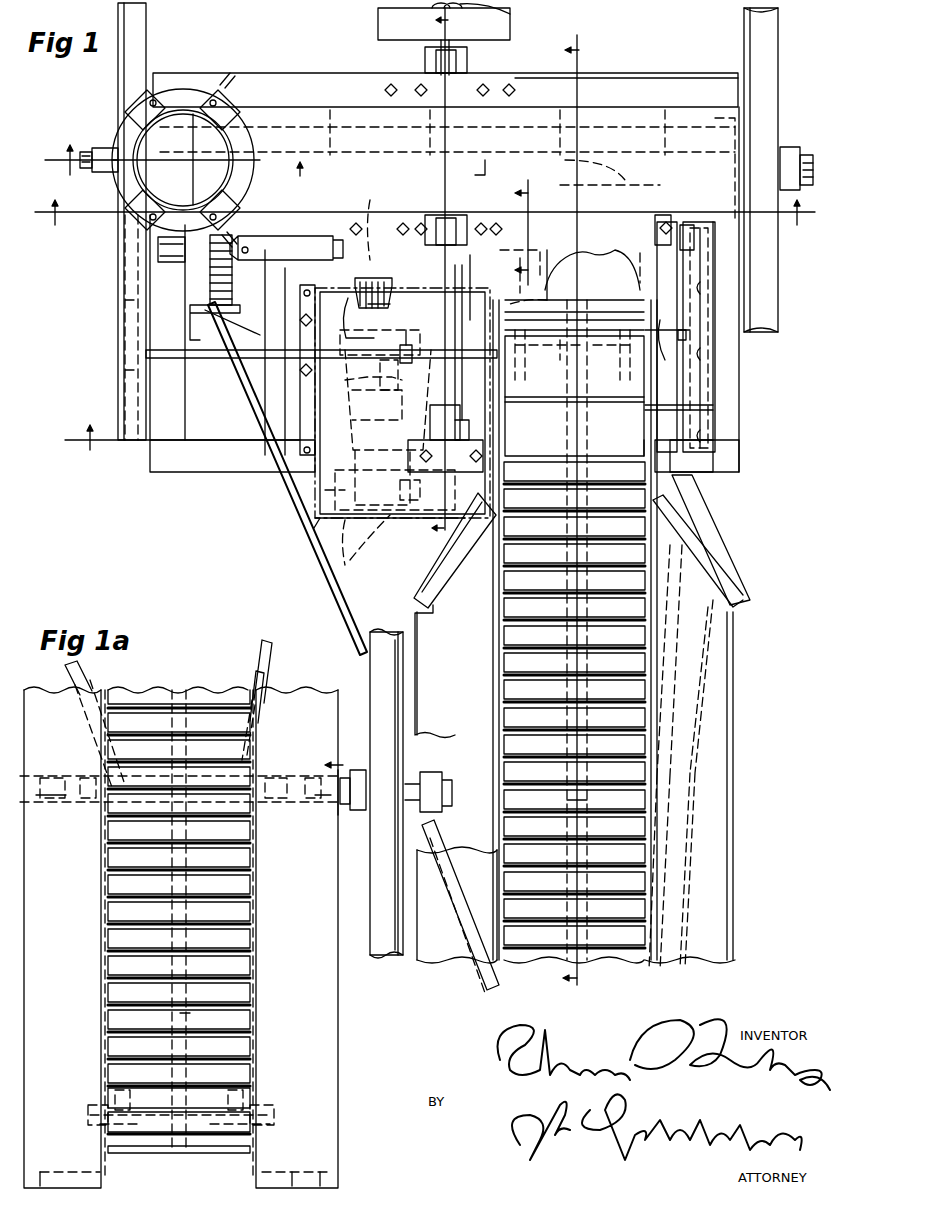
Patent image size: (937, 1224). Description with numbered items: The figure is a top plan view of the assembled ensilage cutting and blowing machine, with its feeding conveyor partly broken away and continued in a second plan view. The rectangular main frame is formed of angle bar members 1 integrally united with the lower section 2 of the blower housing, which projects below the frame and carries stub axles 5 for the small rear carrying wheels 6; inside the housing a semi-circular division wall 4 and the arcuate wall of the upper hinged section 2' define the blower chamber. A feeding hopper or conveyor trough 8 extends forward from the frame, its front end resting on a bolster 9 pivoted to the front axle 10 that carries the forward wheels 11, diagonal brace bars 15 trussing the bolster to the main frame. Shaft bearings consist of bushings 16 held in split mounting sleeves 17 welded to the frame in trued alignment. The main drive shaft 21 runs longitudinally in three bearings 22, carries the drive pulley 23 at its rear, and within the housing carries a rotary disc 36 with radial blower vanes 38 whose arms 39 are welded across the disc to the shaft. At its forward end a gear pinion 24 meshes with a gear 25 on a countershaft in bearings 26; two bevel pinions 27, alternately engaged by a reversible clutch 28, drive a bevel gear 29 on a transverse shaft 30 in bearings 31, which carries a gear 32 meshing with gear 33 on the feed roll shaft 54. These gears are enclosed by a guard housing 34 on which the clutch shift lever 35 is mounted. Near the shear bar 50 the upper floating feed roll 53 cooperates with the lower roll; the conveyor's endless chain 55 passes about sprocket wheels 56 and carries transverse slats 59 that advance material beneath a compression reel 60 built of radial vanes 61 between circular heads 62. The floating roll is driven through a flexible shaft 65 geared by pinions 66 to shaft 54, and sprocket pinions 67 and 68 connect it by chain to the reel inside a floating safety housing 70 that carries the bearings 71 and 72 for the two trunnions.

In FIG. 1, the angle bar members of the main frame 1 is at (690, 82).
In FIG. 1, the lower section of the blower housing 2 is at (572, 516).
In FIG. 1, the upper hinged section of the blower housing 2' is at (626, 70).
In FIG. 1, the semi-circular division wall 4 is at (788, 106).
In FIG. 1, the stub axles 5 is at (82, 147).
In FIG. 1, the rear carrying wheels 6 is at (128, 16).
In FIG. 1, the feeding hopper or conveyor trough 8 is at (576, 631).
In FIG. 1a, the feeding hopper or conveyor trough 8 is at (181, 937).
In FIG. 1, the bolster or auxiliary frame member 9 is at (423, 212).
In FIG. 1a, the bolster or auxiliary frame member 9 is at (42, 802).
In FIG. 1, the front axle 10 is at (247, 478).
In FIG. 1, the forward carrying wheels 11 is at (373, 813).
In FIG. 1, the diagonal brace bars 15 is at (340, 595).
In FIG. 1a, the diagonal brace bars 15 is at (78, 672).
In FIG. 1, the bearing sleeves or bushings 16 is at (315, 357).
In FIG. 1, the split mounting sleeves 17 is at (462, 440).
In FIG. 1, the main drive shaft 21 is at (492, 14).
In FIG. 1, the bearings 22 is at (430, 85).
In FIG. 1, the drive pulley 23 is at (388, 22).
In FIG. 1a, the drive pulley 23 is at (345, 790).
In FIG. 1, the gear pinion 24 is at (428, 520).
In FIG. 1, the gear 25 is at (361, 542).
In FIG. 1, the countershaft bearings 26 is at (285, 537).
In FIG. 1, the beveled gear pinions 27 is at (392, 292).
In FIG. 1, the reversible clutch 28 is at (407, 375).
In FIG. 1, the bevel gear 29 is at (402, 403).
In FIG. 1, the transverse shaft 30 is at (222, 358).
In FIG. 1, the bearings 31 is at (285, 380).
In FIG. 1, the gear 32 is at (122, 378).
In FIG. 1, the gear 33 is at (122, 296).
In FIG. 1, the guard housing 34 is at (389, 537).
In FIG. 1, the shift lever 35 is at (417, 339).
In FIG. 1, the rotary disc 36 is at (493, 172).
In FIG. 1, the blower blades or vanes 38 is at (196, 148).
In FIG. 1, the inwardly extending arms 39 is at (400, 130).
In FIG. 1, the shear bar 50 is at (672, 218).
In FIG. 1, the upper floating feed roll 53 is at (598, 268).
In FIG. 1, the feed roll shaft 54 is at (225, 287).
In FIG. 1, the endless sprocket chain or belt 55 is at (590, 800).
In FIG. 1a, the endless sprocket chain or belt 55 is at (198, 1010).
In FIG. 1, the sprocket wheels 56 is at (585, 380).
In FIG. 1a, the sprocket wheels 56 is at (208, 1150).
In FIG. 1, the transverse slats 59 is at (510, 610).
In FIG. 1a, the transverse slats 59 is at (242, 884).
In FIG. 1, the compression roller or beater 60 is at (625, 443).
In FIG. 1, the radial vanes 61 is at (621, 436).
In FIG. 1, the terminal circular heads 62 is at (508, 418).
In FIG. 1, the flexible shaft 65 is at (322, 236).
In FIG. 1, the intermeshing gear pinions 66 is at (212, 276).
In FIG. 1, the sprocket pinion 67 is at (712, 282).
In FIG. 1, the sprocket pinion 68 is at (712, 358).
In FIG. 1, the floating safety housing 70 is at (715, 375).
In FIG. 1, the bearing 71 is at (690, 250).
In FIG. 1, the bearing 72 is at (670, 410).